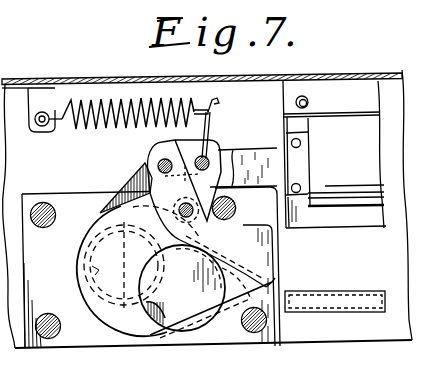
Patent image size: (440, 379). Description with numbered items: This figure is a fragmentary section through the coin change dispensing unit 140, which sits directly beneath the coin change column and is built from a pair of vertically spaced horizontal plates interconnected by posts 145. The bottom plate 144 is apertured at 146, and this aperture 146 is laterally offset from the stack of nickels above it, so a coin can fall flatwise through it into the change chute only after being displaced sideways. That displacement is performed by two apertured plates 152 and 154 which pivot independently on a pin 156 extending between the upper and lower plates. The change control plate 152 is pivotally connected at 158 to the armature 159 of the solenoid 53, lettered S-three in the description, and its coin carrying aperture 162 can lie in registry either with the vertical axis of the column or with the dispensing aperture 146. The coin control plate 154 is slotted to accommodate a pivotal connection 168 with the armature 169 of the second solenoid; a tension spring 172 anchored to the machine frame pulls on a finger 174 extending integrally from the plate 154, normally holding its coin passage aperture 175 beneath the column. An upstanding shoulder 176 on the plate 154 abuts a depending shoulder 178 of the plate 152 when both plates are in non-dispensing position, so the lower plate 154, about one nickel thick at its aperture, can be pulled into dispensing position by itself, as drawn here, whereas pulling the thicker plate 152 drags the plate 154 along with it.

The solenoid S3 53 is at (353, 152).
The coin change dispensing unit 140 is at (95, 361).
The bottom plate 144 is at (38, 281).
The posts 145 is at (54, 224).
The aperture 146 is at (93, 271).
The change control plate 152 is at (147, 160).
The coin control plate 154 is at (150, 187).
The pin 156 is at (194, 216).
The pivotal connection 158 is at (160, 161).
The armature 159 is at (265, 168).
The coin carrying aperture 162 is at (215, 291).
The pivotal connection 168 is at (225, 126).
The armature 169 is at (236, 155).
The tension spring 172 is at (117, 99).
The finger 174 is at (222, 107).
The coin passage aperture 175 is at (61, 305).
The upstanding shoulder 176 is at (145, 172).
The depending shoulder 178 is at (120, 196).